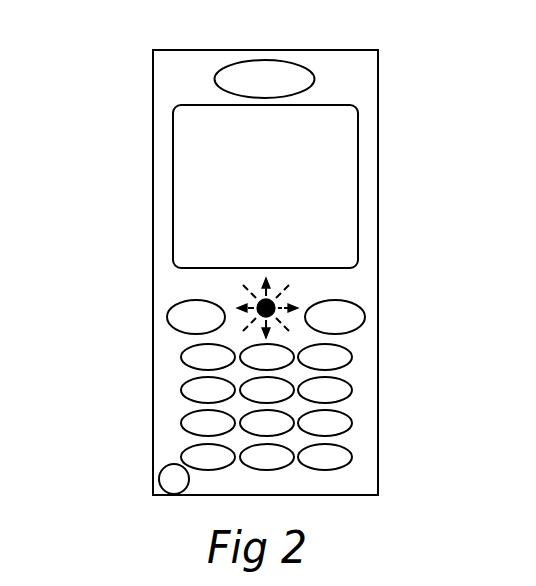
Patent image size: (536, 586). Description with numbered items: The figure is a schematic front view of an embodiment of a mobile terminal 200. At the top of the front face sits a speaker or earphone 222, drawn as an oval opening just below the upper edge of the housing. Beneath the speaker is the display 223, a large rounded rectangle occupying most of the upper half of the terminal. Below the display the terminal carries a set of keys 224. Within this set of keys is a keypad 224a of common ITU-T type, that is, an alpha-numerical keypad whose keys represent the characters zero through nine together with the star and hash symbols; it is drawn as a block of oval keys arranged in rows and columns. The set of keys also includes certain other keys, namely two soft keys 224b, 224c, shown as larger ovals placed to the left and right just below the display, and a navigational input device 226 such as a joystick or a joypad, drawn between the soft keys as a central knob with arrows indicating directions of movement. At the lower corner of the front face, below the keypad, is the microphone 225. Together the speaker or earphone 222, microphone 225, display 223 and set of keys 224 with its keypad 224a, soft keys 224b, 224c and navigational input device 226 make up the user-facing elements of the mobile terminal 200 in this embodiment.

The mobile terminal 200 is at (122, 62).
The speaker or earphone 222 is at (254, 70).
The display 223 is at (185, 172).
The set of keys 224 is at (173, 350).
The keypad 224a is at (342, 388).
The soft key 224b is at (183, 320).
The soft key 224c is at (342, 322).
The microphone 225 is at (171, 478).
The navigational input device 226 is at (257, 305).